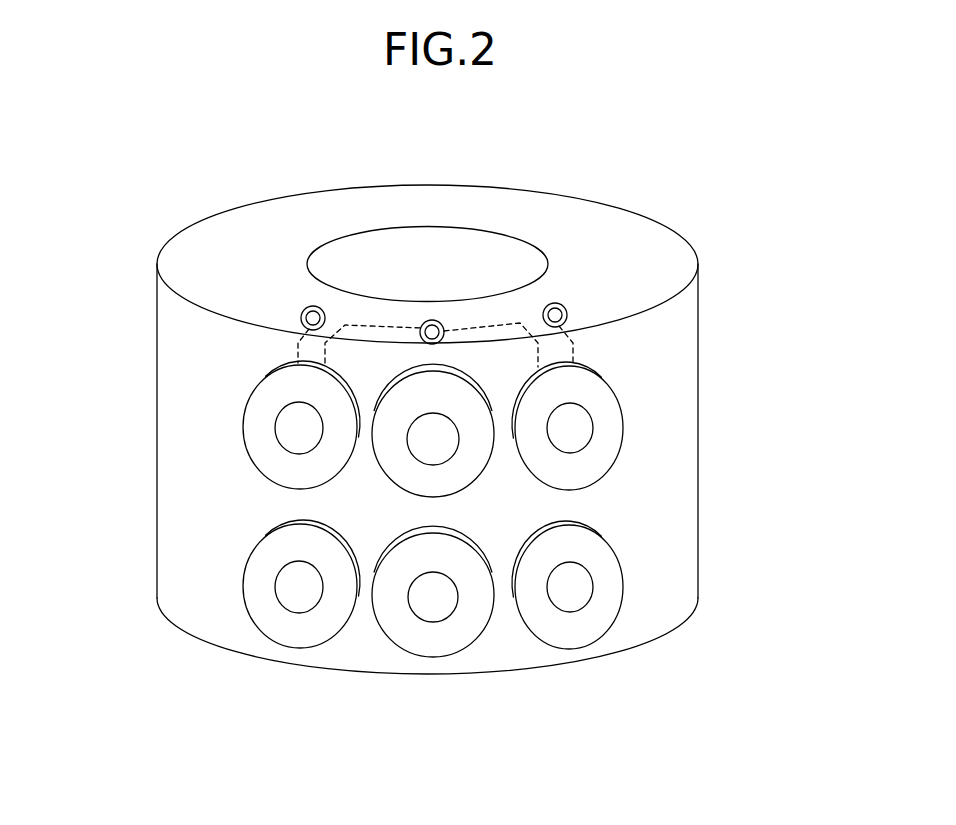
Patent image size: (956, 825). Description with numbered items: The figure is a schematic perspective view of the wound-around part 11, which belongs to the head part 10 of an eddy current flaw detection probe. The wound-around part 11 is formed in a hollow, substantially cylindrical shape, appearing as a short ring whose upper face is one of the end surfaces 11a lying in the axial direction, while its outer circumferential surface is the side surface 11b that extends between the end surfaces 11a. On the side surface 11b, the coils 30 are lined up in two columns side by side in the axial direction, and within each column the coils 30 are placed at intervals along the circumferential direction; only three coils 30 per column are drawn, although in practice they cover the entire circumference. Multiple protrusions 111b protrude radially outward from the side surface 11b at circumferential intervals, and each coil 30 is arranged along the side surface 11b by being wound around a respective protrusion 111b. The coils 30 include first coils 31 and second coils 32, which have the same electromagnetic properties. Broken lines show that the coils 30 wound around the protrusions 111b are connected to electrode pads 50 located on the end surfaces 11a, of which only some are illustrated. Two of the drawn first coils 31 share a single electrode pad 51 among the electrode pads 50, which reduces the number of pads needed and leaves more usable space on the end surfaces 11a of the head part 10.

The head part 10 is at (718, 158).
The wound-around part 11 is at (704, 221).
The end surface 11a is at (557, 213).
The side surface 11b is at (678, 338).
The protrusion 111b is at (300, 428).
The coil 30 is at (434, 544).
The first coil 31 is at (283, 388).
The second coil 32 is at (402, 460).
The electrode pad 50 is at (313, 306).
The electrode pad 51 is at (433, 321).